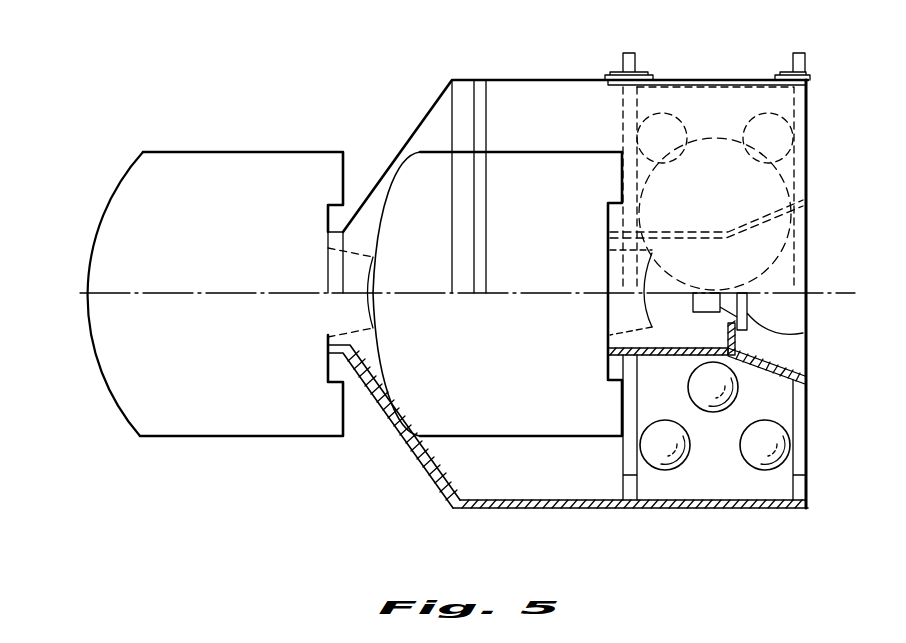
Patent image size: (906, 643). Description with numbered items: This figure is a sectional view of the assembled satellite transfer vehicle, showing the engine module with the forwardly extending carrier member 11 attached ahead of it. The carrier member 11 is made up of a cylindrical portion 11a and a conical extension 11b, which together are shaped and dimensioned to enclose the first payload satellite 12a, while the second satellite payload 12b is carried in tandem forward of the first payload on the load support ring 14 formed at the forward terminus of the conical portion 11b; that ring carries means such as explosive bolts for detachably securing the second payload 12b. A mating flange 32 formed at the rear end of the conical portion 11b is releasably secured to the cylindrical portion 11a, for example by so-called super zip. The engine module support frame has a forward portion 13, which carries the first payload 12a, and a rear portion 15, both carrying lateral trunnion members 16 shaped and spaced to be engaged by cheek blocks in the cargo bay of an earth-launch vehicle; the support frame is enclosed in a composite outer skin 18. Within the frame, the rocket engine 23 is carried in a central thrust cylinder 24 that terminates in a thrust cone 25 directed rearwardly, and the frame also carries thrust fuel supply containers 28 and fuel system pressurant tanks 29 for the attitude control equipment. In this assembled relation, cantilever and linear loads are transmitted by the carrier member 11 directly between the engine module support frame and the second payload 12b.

The forwardly extending carrier member 11 is at (811, 412).
The cylindrical portion 11a is at (531, 493).
The conical extension 11b is at (410, 423).
The first payload satellite 12a is at (525, 404).
The second satellite payload 12b is at (224, 434).
The forward portion of the support frame 13 is at (628, 392).
The load support ring 14 is at (337, 231).
The rear portion of the support frame 15 is at (807, 484).
The lateral trunnion members 16 is at (638, 62).
The composite outer skin 18 is at (740, 508).
The rocket engine 23 is at (786, 248).
The central thrust cylinder 24 is at (661, 338).
The thrust cone 25 is at (795, 369).
The thrust fuel supply containers 28 is at (757, 455).
The fuel system pressurant tanks 29 is at (748, 114).
The mating flange 32 is at (476, 78).